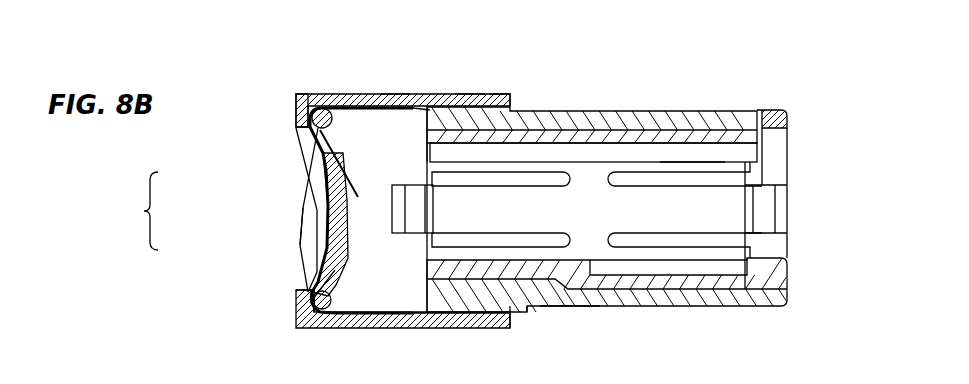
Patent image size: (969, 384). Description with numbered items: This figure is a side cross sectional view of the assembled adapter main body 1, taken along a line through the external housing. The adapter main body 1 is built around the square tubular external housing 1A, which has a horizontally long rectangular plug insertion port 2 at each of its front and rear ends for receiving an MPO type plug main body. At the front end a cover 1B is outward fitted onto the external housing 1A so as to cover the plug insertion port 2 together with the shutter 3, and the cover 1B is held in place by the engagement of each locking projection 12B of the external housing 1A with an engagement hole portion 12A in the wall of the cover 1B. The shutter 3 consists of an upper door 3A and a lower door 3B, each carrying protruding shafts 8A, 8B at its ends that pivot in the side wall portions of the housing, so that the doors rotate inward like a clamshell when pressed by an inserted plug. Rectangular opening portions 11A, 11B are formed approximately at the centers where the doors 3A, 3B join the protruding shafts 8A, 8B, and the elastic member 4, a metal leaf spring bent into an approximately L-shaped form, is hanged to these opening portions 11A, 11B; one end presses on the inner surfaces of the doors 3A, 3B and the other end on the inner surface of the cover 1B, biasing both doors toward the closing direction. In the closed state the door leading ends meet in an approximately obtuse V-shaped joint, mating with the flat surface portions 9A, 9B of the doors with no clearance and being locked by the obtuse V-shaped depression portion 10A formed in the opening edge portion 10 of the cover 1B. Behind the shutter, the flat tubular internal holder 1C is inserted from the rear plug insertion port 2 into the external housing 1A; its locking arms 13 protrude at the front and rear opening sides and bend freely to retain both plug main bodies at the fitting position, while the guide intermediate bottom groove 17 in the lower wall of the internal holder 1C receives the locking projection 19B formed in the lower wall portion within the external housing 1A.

The adapter main body 1 is at (555, 103).
The external housing 1A is at (617, 111).
The cover 1B is at (392, 93).
The internal holder 1C is at (692, 150).
The plug insertion port 2 is at (772, 152).
The shutter 3 is at (234, 210).
The upper door 3A is at (306, 166).
The lower door 3B is at (325, 257).
The elastic member 4 is at (345, 95).
The protruding shaft 8A is at (300, 113).
The protruding shaft 8B is at (297, 313).
The flat surface portion 9A is at (335, 270).
The flat surface portion 9B is at (351, 281).
The opening edge portion 10 is at (313, 244).
The depression portion 10A is at (313, 213).
The opening portion 11A is at (332, 127).
The opening portion 11B is at (331, 300).
The engagement hole portion 12A is at (437, 92).
The locking projection 12B is at (457, 92).
The locking arm 13 is at (393, 203).
The guide intermediate bottom groove 17 is at (527, 312).
The locking projection 19B is at (567, 300).